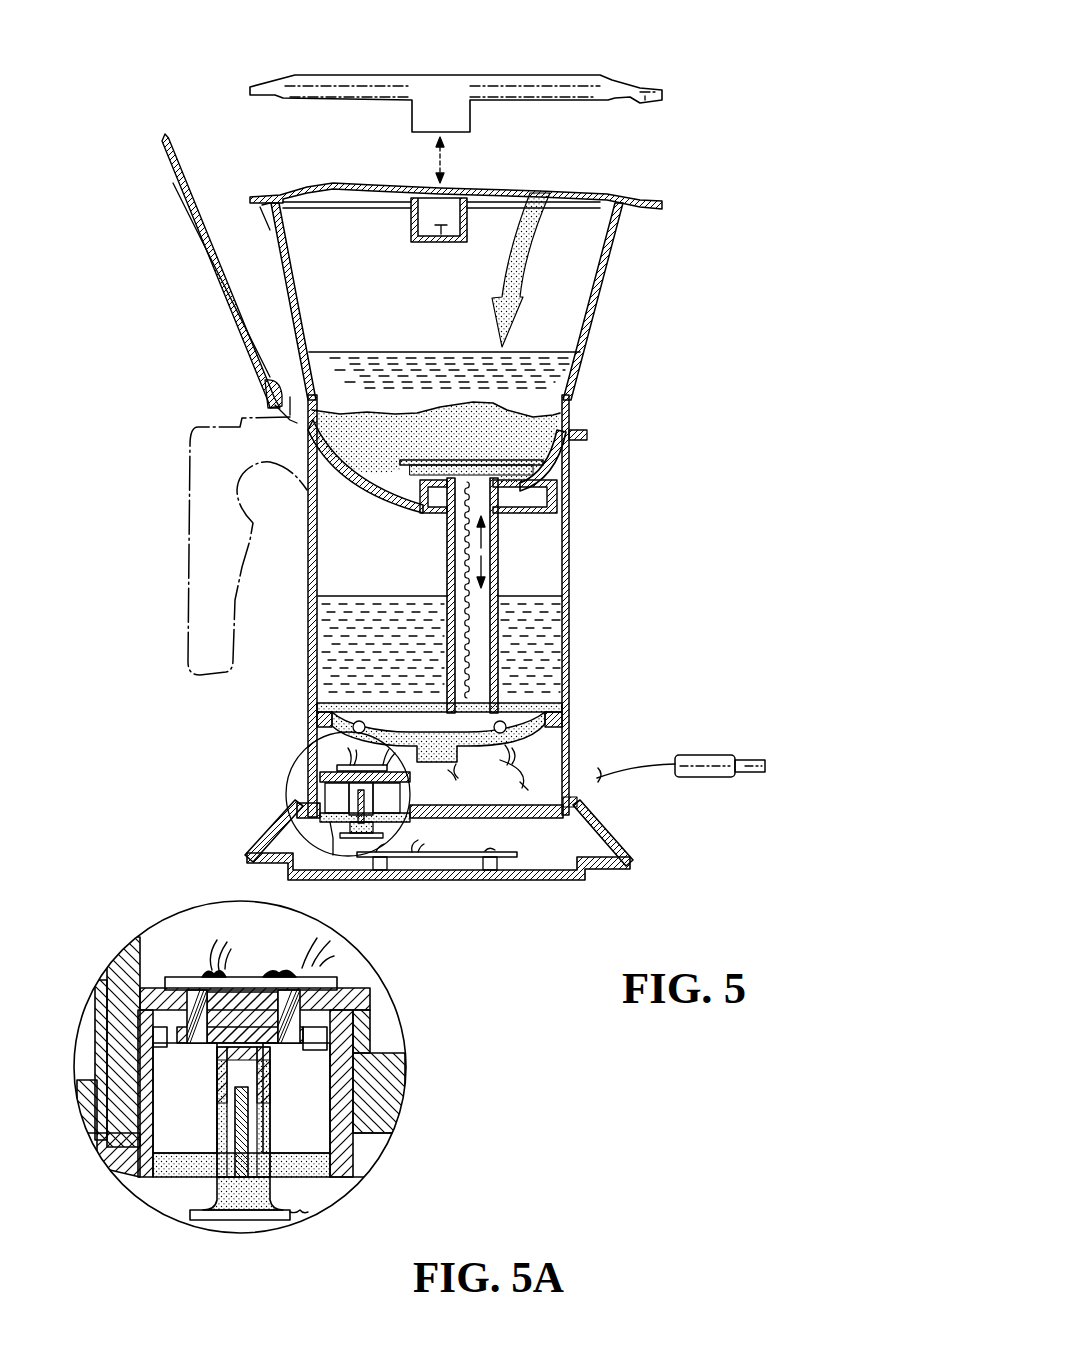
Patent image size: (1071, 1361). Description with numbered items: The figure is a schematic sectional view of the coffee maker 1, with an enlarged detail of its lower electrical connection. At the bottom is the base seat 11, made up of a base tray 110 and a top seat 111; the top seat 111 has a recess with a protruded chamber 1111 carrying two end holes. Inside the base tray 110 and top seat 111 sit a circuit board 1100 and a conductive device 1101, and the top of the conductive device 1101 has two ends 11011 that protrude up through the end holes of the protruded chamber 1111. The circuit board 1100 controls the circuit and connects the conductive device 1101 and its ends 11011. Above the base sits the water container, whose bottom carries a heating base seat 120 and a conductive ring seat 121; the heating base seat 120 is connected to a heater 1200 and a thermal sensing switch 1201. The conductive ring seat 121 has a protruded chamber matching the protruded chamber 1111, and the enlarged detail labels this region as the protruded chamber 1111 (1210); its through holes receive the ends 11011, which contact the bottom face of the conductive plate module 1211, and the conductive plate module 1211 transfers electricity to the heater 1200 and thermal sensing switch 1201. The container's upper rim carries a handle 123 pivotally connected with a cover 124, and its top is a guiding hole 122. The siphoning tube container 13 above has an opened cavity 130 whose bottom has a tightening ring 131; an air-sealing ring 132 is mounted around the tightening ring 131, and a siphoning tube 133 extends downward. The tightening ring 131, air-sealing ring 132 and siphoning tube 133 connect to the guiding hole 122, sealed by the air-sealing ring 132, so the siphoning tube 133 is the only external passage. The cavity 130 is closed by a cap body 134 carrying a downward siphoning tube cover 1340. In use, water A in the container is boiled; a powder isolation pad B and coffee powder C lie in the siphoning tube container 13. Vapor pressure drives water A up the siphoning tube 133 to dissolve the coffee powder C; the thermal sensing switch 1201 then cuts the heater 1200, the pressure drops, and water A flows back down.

In FIG. 5, the coffee maker 1 is at (439, 481).
In FIG. 5, the base seat 11 is at (512, 881).
In FIG. 5A, the base seat 11 is at (310, 1160).
In FIG. 5, the base tray 110 is at (598, 866).
In FIG. 5, the top seat 111 is at (603, 832).
In FIG. 5, the circuit board 1100 is at (450, 837).
In FIG. 5, the conductive device 1101 is at (333, 855).
In FIG. 5A, the end 11011 is at (346, 1010).
In FIG. 5A, the protruded chamber 1111 is at (364, 1057).
In FIG. 5A, the contact post 1210 is at (350, 1060).
In FIG. 5, the heating base seat 120 is at (313, 663).
In FIG. 5, the heater 1200 is at (565, 709).
In FIG. 5, the thermal sensing switch 1201 is at (545, 760).
In FIG. 5, the conductive ring seat 121 is at (522, 788).
In FIG. 5, the conductive plate module 1211 is at (313, 750).
In FIG. 5A, the conductive plate module 1211 is at (339, 968).
In FIG. 5, the guiding hole 122 is at (472, 595).
In FIG. 5, the handle 123 is at (193, 505).
In FIG. 5, the cover 124 is at (217, 260).
In FIG. 5, the siphoning tube container 13 is at (507, 200).
In FIG. 5, the cavity 130 is at (565, 264).
In FIG. 5, the tightening ring 131 is at (568, 528).
In FIG. 5, the air-sealing ring 132 is at (623, 595).
In FIG. 5, the siphoning tube 133 is at (535, 574).
In FIG. 5, the cap body 134 is at (575, 78).
In FIG. 5, the siphoning tube cover 1340 is at (442, 228).
In FIG. 5, the water A is at (500, 366).
In FIG. 5, the powder isolation pad B is at (540, 408).
In FIG. 5, the coffee powder C is at (540, 403).